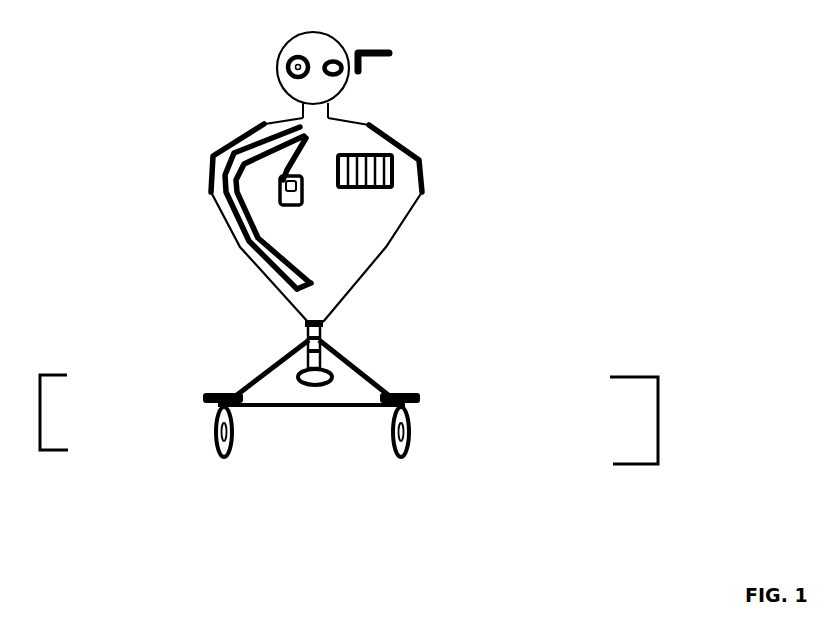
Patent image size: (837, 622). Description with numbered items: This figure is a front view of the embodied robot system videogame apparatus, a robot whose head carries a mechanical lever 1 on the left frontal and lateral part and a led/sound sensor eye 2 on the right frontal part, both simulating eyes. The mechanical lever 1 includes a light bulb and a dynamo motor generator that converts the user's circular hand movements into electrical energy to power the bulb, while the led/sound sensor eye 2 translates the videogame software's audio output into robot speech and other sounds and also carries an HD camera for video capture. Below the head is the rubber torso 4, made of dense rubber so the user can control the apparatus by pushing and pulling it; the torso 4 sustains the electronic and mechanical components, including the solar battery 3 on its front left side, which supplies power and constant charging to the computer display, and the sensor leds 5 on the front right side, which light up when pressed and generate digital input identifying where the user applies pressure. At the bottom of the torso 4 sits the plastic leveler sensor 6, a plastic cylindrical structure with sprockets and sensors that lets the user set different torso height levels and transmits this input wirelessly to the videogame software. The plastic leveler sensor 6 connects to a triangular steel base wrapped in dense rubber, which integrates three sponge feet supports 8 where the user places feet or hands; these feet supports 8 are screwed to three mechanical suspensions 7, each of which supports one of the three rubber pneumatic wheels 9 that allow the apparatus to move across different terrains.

The mechanical lever 1 is at (378, 67).
The led/sound sensor eye 2 is at (276, 65).
The solar battery 3 is at (398, 170).
The rubber torso 4 is at (370, 232).
The sensor leds 5 is at (248, 242).
The plastic leveler sensor 6 is at (325, 351).
The mechanical suspensions 7 is at (207, 403).
The feet support 8 is at (420, 393).
The rubber pneumatic wheels 9 is at (408, 428).